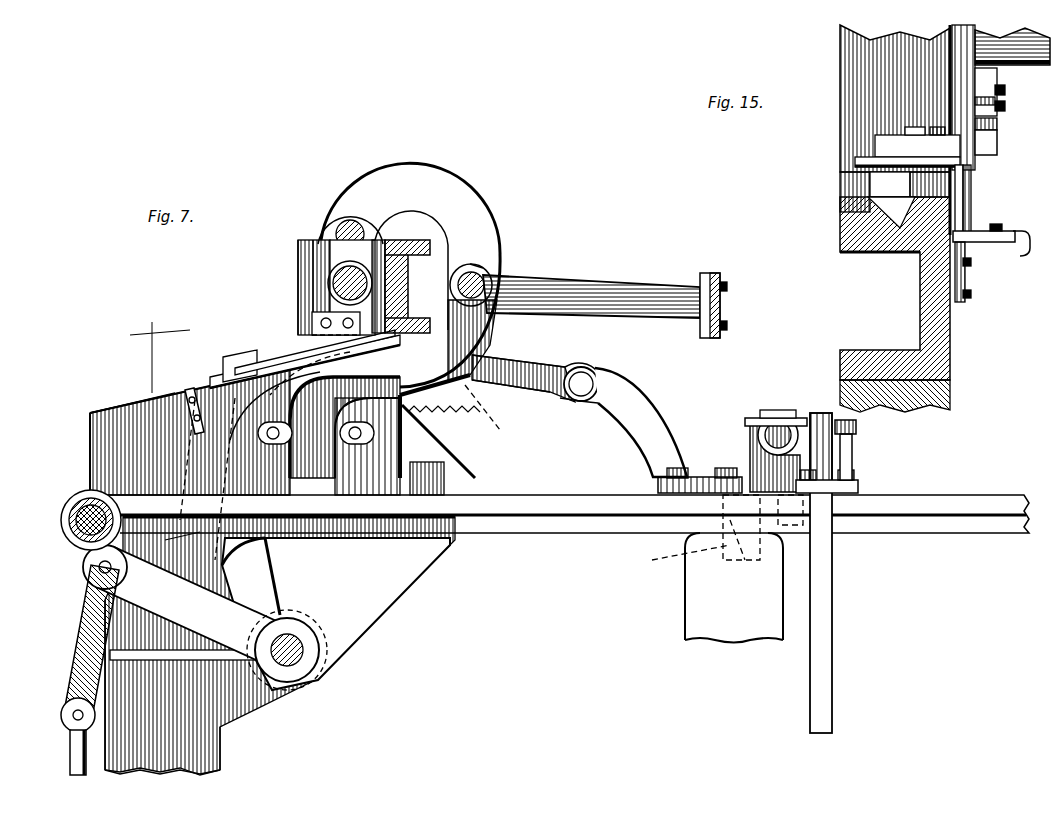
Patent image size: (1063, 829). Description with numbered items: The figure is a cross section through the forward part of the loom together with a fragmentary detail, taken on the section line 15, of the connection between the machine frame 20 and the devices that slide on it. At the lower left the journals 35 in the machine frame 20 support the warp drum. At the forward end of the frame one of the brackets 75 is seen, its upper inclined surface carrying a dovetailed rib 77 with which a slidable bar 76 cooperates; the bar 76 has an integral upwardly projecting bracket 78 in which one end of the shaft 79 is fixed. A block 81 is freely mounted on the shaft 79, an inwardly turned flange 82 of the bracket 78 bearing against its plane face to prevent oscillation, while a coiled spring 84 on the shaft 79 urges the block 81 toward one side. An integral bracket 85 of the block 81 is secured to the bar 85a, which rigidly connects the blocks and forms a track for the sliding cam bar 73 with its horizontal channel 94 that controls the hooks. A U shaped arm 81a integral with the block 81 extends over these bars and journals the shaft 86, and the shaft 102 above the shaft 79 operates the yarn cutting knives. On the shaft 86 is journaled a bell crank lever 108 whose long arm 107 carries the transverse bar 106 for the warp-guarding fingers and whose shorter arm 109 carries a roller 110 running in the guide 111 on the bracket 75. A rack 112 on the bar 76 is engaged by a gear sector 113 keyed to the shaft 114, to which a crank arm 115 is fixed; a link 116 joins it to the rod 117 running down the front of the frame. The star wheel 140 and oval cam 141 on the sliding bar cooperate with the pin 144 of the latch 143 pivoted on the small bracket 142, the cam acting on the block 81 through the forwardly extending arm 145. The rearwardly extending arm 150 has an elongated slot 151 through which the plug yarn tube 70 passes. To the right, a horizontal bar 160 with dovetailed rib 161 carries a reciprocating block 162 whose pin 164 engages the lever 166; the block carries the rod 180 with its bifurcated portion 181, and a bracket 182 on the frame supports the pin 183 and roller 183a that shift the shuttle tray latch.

In FIG. 7, the section line 15— 15 is at (165, 434).
In FIG. 7, the machine frame 20 is at (930, 536).
In FIG. 7, the journals 35 is at (88, 518).
In FIG. 7, the hollow rod, or tube 70 is at (586, 380).
In FIG. 7, the sliding cam bar 73 is at (480, 340).
In FIG. 7, the brackets 75 is at (430, 446).
In FIG. 15, the brackets 75 is at (935, 336).
In FIG. 7, the bars 76 is at (206, 385).
In FIG. 15, the bars 76 is at (855, 183).
In FIG. 7, the dovetailed rib 77 is at (100, 413).
In FIG. 15, the dovetailed rib 77 is at (893, 210).
In FIG. 7, the bracket 78 is at (300, 342).
In FIG. 15, the bracket 78 is at (850, 114).
In FIG. 7, the shaft 79 is at (342, 272).
In FIG. 15, the shaft 79 is at (1012, 44).
In FIG. 7, the blocks 81 is at (324, 292).
In FIG. 15, the blocks 81 is at (1005, 96).
In FIG. 7, the U shaped arm 81a is at (440, 178).
In FIG. 7, the inwardly turned flange 82 is at (306, 272).
In FIG. 15, the inwardly turned flange 82 is at (912, 92).
In FIG. 7, the coiled spring 84 is at (331, 282).
In FIG. 7, the bracket 85 is at (380, 255).
In FIG. 7, the bar 85a is at (433, 242).
In FIG. 7, the shaft 86 is at (476, 284).
In FIG. 7, the horizontal channel 94 is at (416, 266).
In FIG. 7, the shaft 102 is at (345, 224).
In FIG. 7, the transverse bar 106 is at (727, 307).
In FIG. 7, the long arm 107 is at (632, 292).
In FIG. 7, the bell crank lever 108 is at (496, 284).
In FIG. 7, the shorter arm 109 is at (470, 356).
In FIG. 7, the roller 110 is at (412, 399).
In FIG. 7, the bracket, or guide 111 is at (340, 462).
In FIG. 7, the rack 112 is at (470, 382).
In FIG. 7, the gear sector 113 is at (352, 612).
In FIG. 7, the shaft 114 is at (312, 655).
In FIG. 7, the crank arm 115 is at (250, 605).
In FIG. 7, the link 116 is at (90, 628).
In FIG. 7, the rod 117 is at (72, 755).
In FIG. 7, the star wheel 140 is at (216, 375).
In FIG. 15, the star wheel 140 is at (860, 163).
In FIG. 7, the oval cam 141 is at (238, 356).
In FIG. 15, the oval cam 141 is at (898, 146).
In FIG. 7, the small bracket 142 is at (158, 406).
In FIG. 15, the small bracket 142 is at (1020, 252).
In FIG. 15, the latch 143 is at (978, 231).
In FIG. 7, the pin 144 is at (180, 387).
In FIG. 15, the pin 144 is at (968, 188).
In FIG. 7, the forwardly extending arm 145 is at (280, 340).
In FIG. 15, the forwardly extending arm 145 is at (990, 139).
In FIG. 7, the rearwardly extending arm 150 is at (546, 376).
In FIG. 7, the elongated slot 151 is at (630, 403).
In FIG. 7, the horizontal bars 160 is at (658, 487).
In FIG. 7, the dovetailed rib 161 is at (752, 572).
In FIG. 7, the block 162 is at (778, 410).
In FIG. 7, the pin 164 is at (796, 560).
In FIG. 7, the lever 166 is at (832, 616).
In FIG. 7, the rod 180 is at (760, 436).
In FIG. 7, the forked bifurcated portion 181 is at (745, 421).
In FIG. 7, the laterally projecting bracket 182 is at (860, 482).
In FIG. 7, the pin 183 is at (855, 445).
In FIG. 7, the roller 183a is at (857, 427).